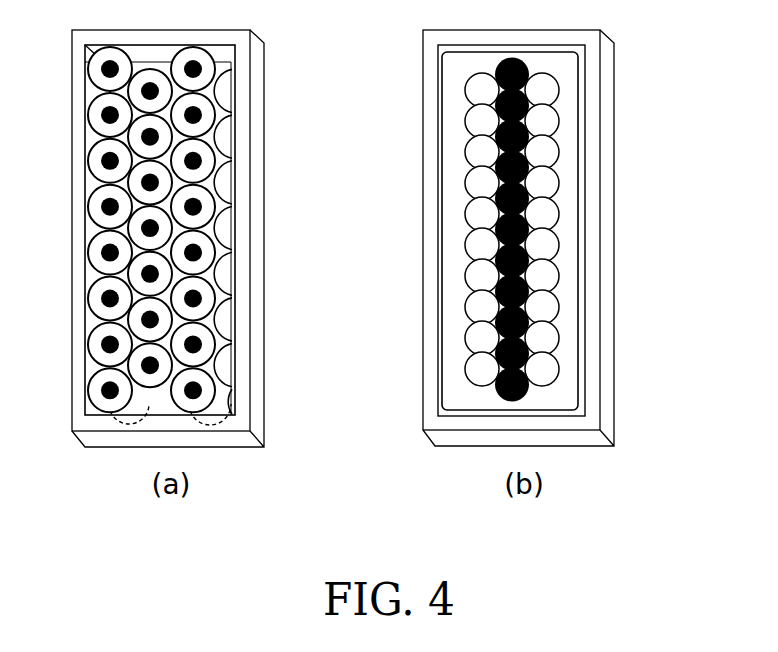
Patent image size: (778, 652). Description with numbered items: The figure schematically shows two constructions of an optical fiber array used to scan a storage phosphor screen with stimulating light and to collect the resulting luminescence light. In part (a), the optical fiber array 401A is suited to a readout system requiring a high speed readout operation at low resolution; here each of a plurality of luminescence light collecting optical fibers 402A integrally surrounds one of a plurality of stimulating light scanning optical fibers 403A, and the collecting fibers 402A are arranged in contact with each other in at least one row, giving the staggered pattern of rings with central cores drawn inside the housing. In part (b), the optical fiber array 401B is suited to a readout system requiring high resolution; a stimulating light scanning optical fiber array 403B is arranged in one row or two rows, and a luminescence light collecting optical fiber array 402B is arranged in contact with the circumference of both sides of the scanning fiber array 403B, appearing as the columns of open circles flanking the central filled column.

The optical fiber array 401A is at (236, 116).
The luminescence light collecting optical fibers 402A is at (214, 205).
The stimulating light scanning optical fibers 403A is at (201, 247).
The optical fiber array 401B is at (588, 122).
The luminescence light collecting optical fiber array 402B is at (548, 213).
The stimulating light scanning optical fiber array 403B is at (522, 279).